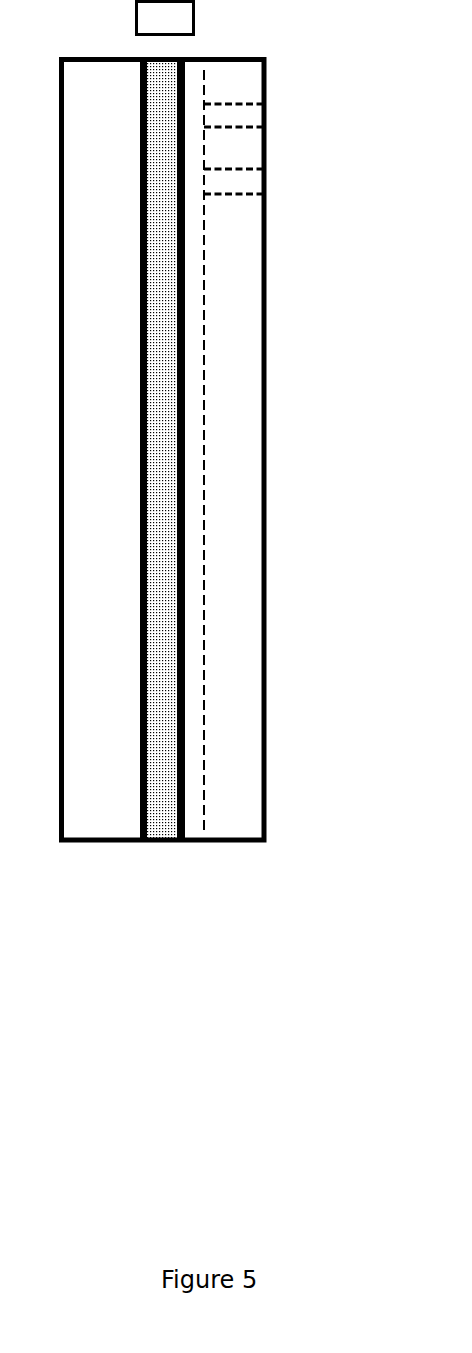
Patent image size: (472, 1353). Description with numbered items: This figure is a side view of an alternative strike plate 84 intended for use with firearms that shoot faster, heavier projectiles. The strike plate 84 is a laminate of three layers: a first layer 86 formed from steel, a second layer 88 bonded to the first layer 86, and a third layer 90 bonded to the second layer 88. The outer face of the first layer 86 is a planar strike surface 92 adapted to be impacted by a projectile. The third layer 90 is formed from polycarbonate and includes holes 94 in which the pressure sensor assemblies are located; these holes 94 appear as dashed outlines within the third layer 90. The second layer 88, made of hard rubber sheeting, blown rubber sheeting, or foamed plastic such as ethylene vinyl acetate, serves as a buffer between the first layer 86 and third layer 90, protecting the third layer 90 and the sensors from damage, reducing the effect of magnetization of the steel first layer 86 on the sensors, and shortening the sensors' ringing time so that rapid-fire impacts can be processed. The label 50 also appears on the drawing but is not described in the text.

The fabric structure 50 is at (192, 450).
The alternative strike plate 84 is at (165, 18).
The first layer 86 is at (102, 469).
The second layer 88 is at (162, 469).
The third layer 90 is at (221, 473).
The planar strike surface 92 is at (34, 450).
The holes 94 is at (298, 149).